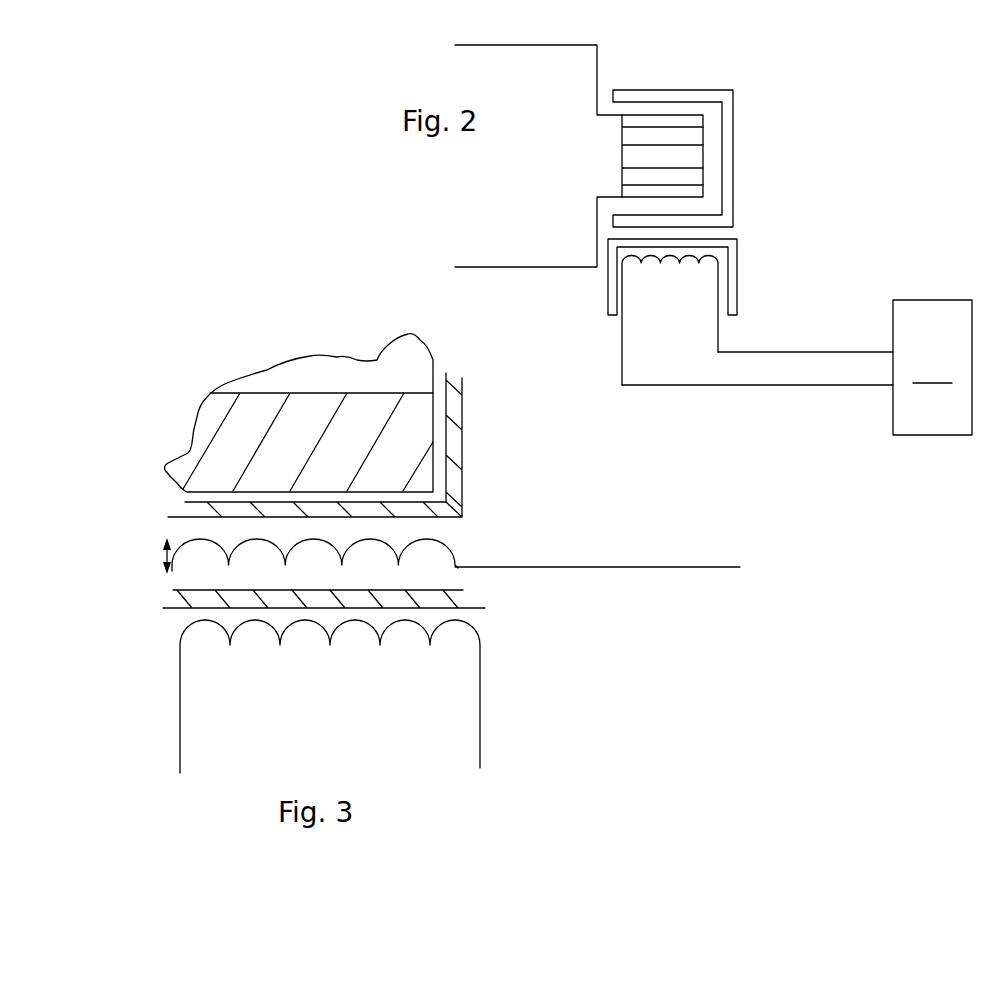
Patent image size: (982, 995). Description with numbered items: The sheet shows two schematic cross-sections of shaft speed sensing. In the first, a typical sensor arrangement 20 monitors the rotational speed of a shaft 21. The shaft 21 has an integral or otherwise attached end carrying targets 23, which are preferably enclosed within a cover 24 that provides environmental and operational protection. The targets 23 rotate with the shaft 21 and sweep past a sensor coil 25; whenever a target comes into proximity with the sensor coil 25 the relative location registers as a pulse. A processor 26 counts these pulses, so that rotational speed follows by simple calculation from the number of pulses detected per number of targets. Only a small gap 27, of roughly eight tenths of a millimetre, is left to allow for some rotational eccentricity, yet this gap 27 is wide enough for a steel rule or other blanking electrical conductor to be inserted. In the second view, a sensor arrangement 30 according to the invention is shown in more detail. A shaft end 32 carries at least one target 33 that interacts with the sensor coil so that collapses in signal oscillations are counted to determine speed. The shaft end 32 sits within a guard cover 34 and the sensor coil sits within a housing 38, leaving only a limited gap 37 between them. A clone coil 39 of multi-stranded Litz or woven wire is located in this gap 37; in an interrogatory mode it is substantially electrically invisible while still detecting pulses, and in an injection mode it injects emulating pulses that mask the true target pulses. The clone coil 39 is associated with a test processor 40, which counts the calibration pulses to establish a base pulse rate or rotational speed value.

In FIG. 2, the sensor arrangement 20 is at (836, 116).
In FIG. 2, the shaft 21 is at (601, 60).
In FIG. 2, the targets 23 is at (716, 106).
In FIG. 2, the cover 24 is at (744, 186).
In FIG. 2, the sensor coil 25 is at (710, 269).
In FIG. 3, the sensor coil 25 is at (495, 672).
In FIG. 2, the processor 26 is at (797, 367).
In FIG. 2, the gap 27 is at (751, 231).
In FIG. 3, the sensor arrangement 30 is at (520, 501).
In FIG. 3, the shaft end 32 is at (326, 362).
In FIG. 3, the target 33 is at (192, 432).
In FIG. 3, the guard cover 34 is at (474, 432).
In FIG. 3, the gap 37 is at (153, 568).
In FIG. 3, the housing 38 is at (177, 617).
In FIG. 3, the clone coil 39 is at (474, 560).
In FIG. 3, the test processor 40 is at (745, 580).